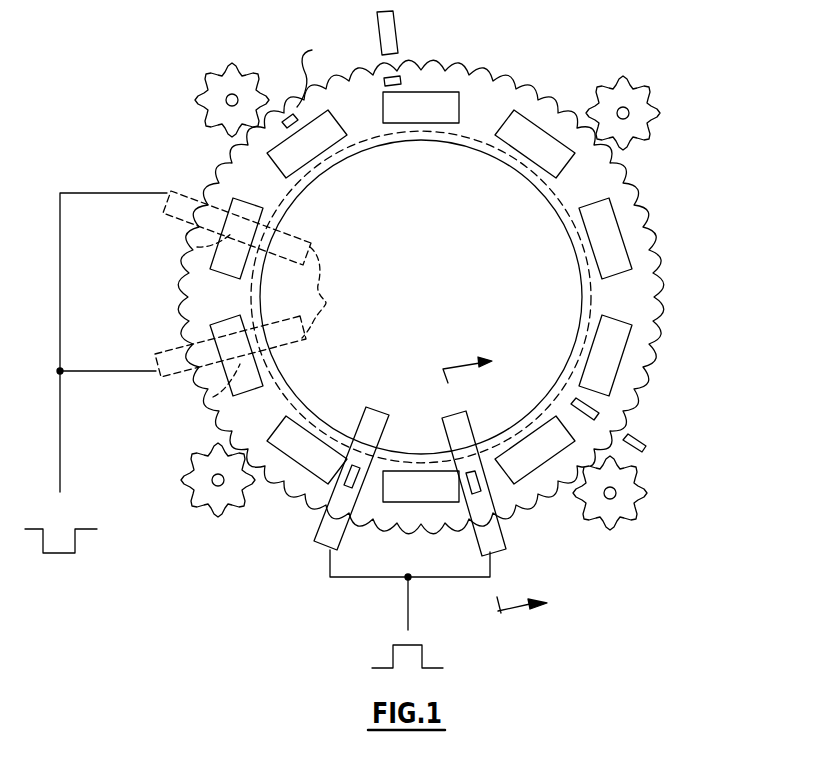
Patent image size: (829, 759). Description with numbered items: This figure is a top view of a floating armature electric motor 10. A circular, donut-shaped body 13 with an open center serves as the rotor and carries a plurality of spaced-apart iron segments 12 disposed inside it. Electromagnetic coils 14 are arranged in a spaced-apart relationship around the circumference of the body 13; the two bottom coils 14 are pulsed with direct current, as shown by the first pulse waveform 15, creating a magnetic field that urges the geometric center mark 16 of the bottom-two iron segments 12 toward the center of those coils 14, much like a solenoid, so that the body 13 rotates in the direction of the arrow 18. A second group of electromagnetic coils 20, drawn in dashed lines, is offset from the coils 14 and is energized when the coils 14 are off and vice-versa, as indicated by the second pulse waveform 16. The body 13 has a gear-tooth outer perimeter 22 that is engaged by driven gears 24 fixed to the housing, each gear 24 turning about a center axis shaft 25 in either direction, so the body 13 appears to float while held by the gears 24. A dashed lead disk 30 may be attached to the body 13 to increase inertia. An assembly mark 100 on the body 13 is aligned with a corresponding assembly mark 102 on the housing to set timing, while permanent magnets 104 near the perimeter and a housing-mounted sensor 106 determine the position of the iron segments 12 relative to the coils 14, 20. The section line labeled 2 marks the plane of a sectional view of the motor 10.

The floating armature electric motor 10 is at (402, 334).
The iron segments 12 is at (510, 123).
The body 13 is at (636, 284).
The electromagnetic coils 14 is at (313, 546).
The first pulse waveform 15 is at (409, 621).
The geometric center mark 16 is at (190, 232).
The arrow 18 is at (138, 347).
The second electromagnetic coils 20 is at (324, 296).
The gear-tooth outer perimeter 22 is at (437, 62).
The driven gears 24 is at (232, 66).
The center axis shaft 25 is at (228, 101).
The lead disk 30 is at (570, 372).
The assembly mark 100 is at (600, 406).
The assembly mark 102 is at (644, 441).
The permanent magnets 104 is at (388, 82).
The sensor 106 is at (374, 0).
The section line 2- 2 is at (501, 481).